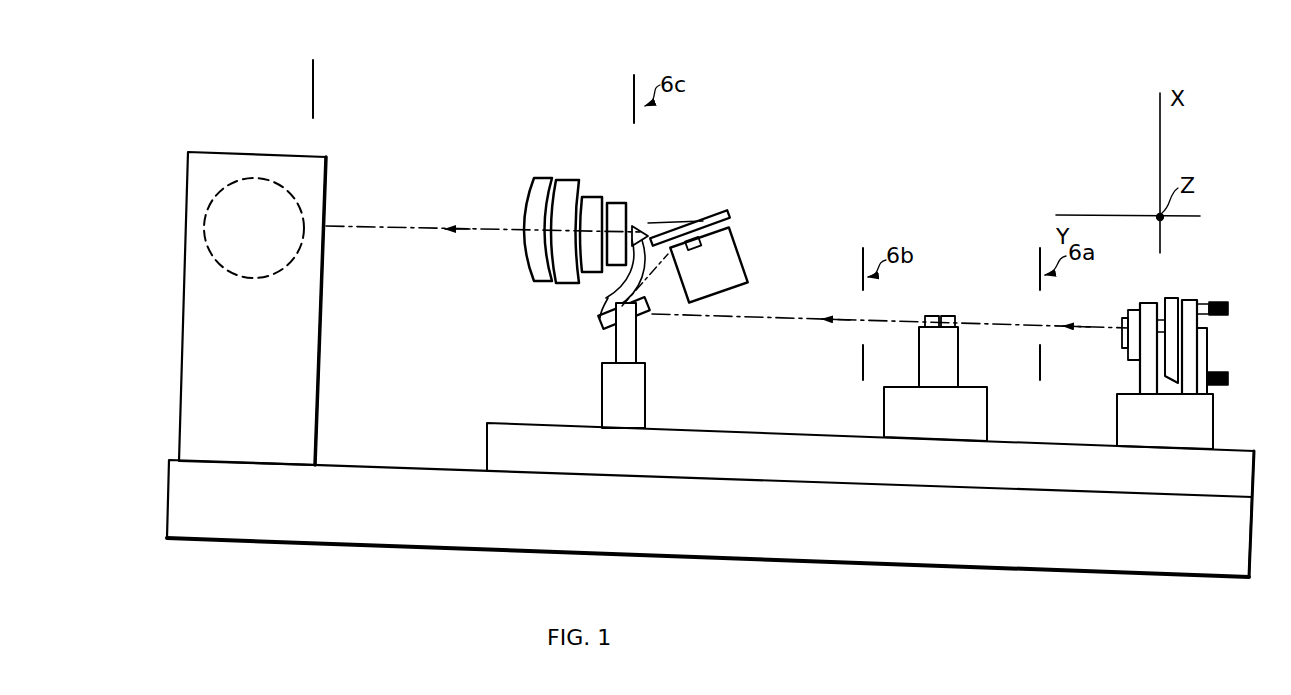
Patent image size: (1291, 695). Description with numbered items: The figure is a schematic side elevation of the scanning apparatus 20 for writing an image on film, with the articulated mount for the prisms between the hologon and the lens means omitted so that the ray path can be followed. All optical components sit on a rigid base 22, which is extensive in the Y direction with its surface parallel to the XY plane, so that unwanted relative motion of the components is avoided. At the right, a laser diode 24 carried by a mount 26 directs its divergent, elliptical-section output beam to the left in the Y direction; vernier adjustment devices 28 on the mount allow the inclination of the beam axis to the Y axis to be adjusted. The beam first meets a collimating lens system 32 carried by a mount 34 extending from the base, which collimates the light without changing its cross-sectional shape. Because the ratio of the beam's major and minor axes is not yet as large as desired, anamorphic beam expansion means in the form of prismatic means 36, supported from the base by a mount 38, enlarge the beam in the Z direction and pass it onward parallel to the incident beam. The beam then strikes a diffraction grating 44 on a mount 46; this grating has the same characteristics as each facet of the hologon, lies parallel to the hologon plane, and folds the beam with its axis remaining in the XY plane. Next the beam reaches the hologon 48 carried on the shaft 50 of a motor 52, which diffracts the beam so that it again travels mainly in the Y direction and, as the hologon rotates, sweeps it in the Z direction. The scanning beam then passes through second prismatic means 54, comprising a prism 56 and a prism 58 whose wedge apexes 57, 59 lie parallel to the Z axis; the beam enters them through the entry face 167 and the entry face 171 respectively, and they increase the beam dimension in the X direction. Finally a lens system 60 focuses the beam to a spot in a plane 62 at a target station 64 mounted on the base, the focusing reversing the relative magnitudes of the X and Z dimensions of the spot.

The scanning apparatus 20 is at (833, 236).
The rigid base 22 is at (873, 543).
The laser diode 24 is at (1170, 300).
The mount 26 is at (1200, 364).
The vernier adjustment devices 28 is at (1217, 303).
The collimating lens system 32 is at (1127, 320).
The mount 34 is at (1143, 377).
The prismatic means 36 is at (937, 310).
The mount 38 is at (943, 360).
The diffraction grating 44 is at (603, 322).
The mount 46 is at (632, 346).
The hologon 48 is at (722, 210).
The shaft 50 is at (735, 223).
The motor 52 is at (732, 272).
The second prismatic means 54 is at (642, 200).
The prism 56 is at (668, 222).
The apex 57 is at (650, 228).
The prism 58 is at (633, 225).
The apex 59 is at (622, 280).
The lens system 60 is at (549, 176).
The plane 62 is at (313, 90).
The target station 64 is at (235, 145).
The entry face 167 is at (650, 228).
The entry face 171 is at (606, 300).